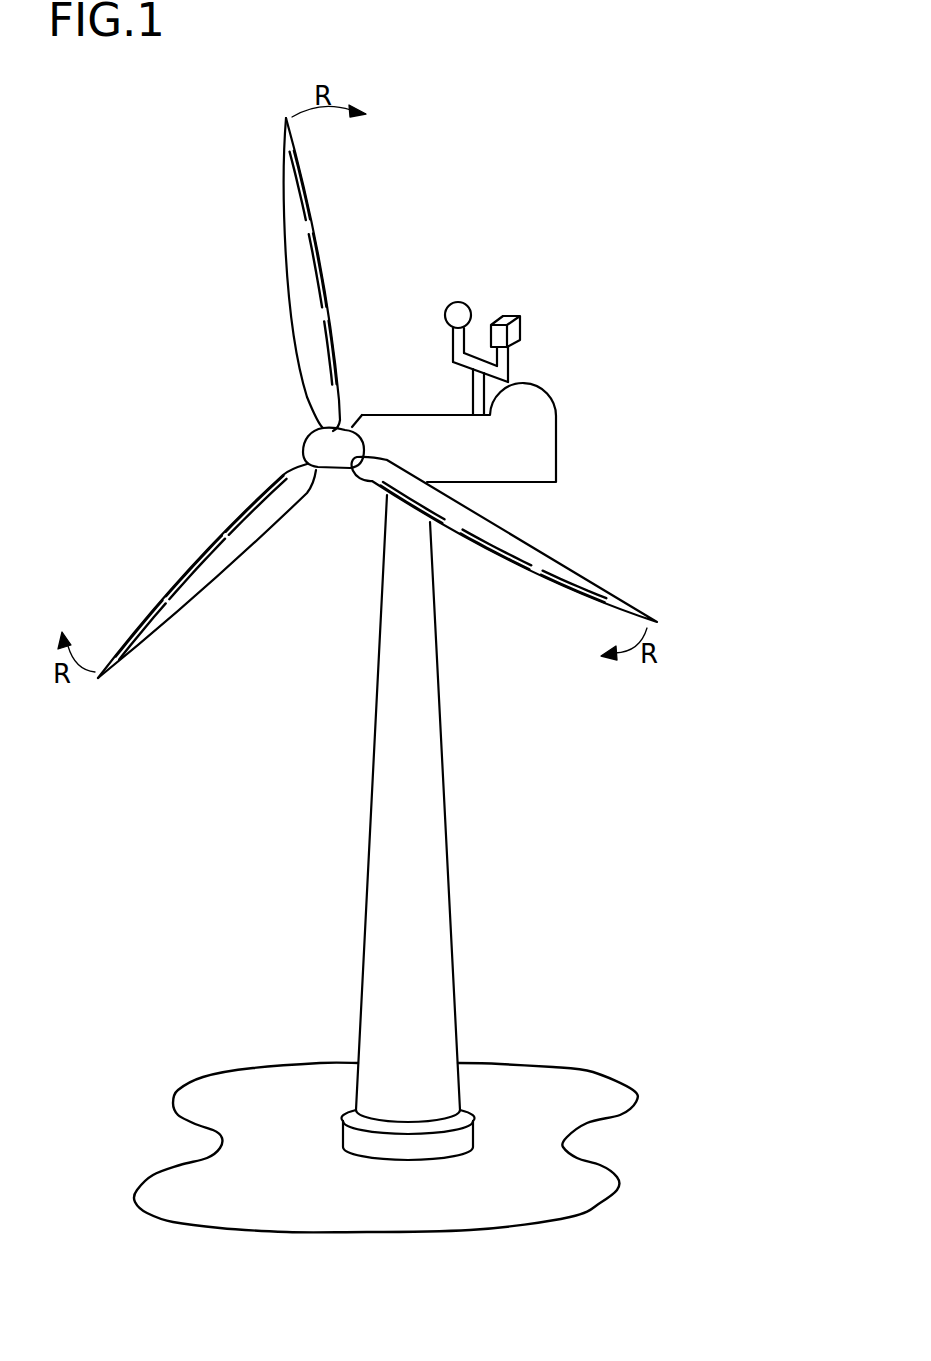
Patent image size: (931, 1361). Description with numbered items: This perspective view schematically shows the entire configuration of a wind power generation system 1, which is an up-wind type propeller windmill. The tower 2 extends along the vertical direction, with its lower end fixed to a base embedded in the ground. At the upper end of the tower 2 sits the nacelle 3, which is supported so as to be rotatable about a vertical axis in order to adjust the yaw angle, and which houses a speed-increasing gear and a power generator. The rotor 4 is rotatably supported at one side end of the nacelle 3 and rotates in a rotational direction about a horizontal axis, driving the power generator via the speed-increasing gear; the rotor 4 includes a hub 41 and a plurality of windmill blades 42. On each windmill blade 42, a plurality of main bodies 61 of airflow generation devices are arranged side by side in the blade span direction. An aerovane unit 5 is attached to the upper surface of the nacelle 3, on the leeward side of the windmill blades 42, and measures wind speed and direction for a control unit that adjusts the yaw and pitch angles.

The wind power generation system 1 is at (373, 61).
The tower 2 is at (421, 813).
The nacelle 3 is at (537, 453).
The rotor 4 is at (371, 398).
The aerovane unit 5 is at (470, 357).
The hub 41 is at (327, 457).
The windmill blade 42 is at (286, 234).
The main body 61 is at (306, 181).